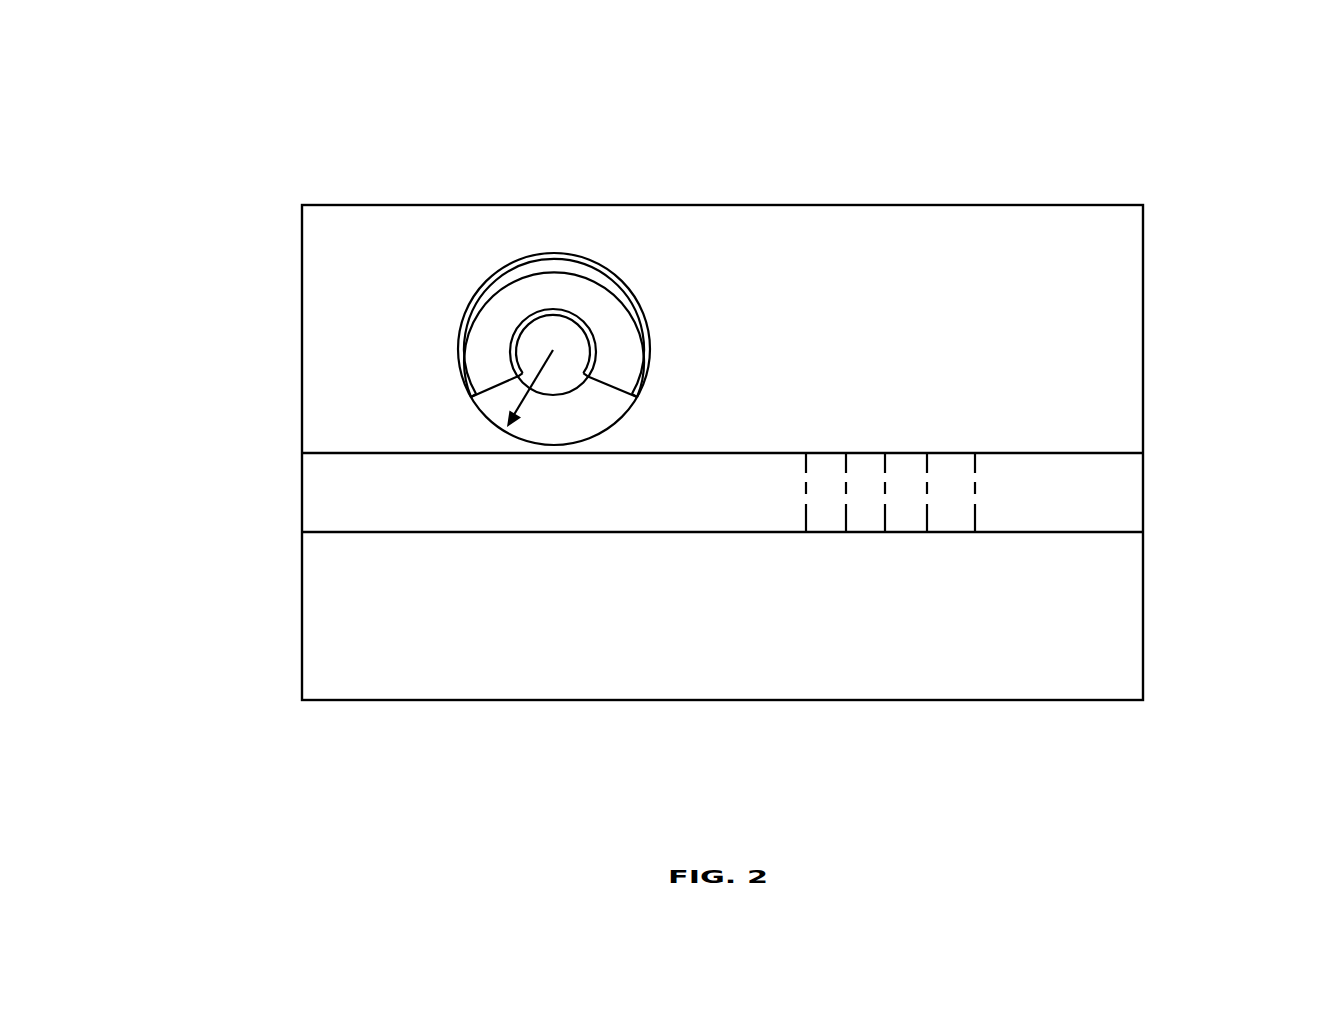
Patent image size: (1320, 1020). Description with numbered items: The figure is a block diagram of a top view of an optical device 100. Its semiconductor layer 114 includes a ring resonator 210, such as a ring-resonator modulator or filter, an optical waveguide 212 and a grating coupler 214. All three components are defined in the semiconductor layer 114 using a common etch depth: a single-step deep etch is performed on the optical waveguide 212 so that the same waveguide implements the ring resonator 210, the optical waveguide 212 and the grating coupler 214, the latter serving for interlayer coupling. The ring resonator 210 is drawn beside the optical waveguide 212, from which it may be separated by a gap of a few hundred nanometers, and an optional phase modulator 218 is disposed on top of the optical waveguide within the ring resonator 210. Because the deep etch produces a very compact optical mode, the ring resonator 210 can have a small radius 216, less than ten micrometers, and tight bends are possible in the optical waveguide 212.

The optical device 100 is at (1140, 122).
The semiconductor layer 114 is at (738, 260).
The ring resonator 210 is at (498, 328).
The optical waveguide 212 is at (330, 502).
The grating coupler 214 is at (805, 607).
The radius 216 is at (540, 371).
The phase modulator 218 is at (670, 381).